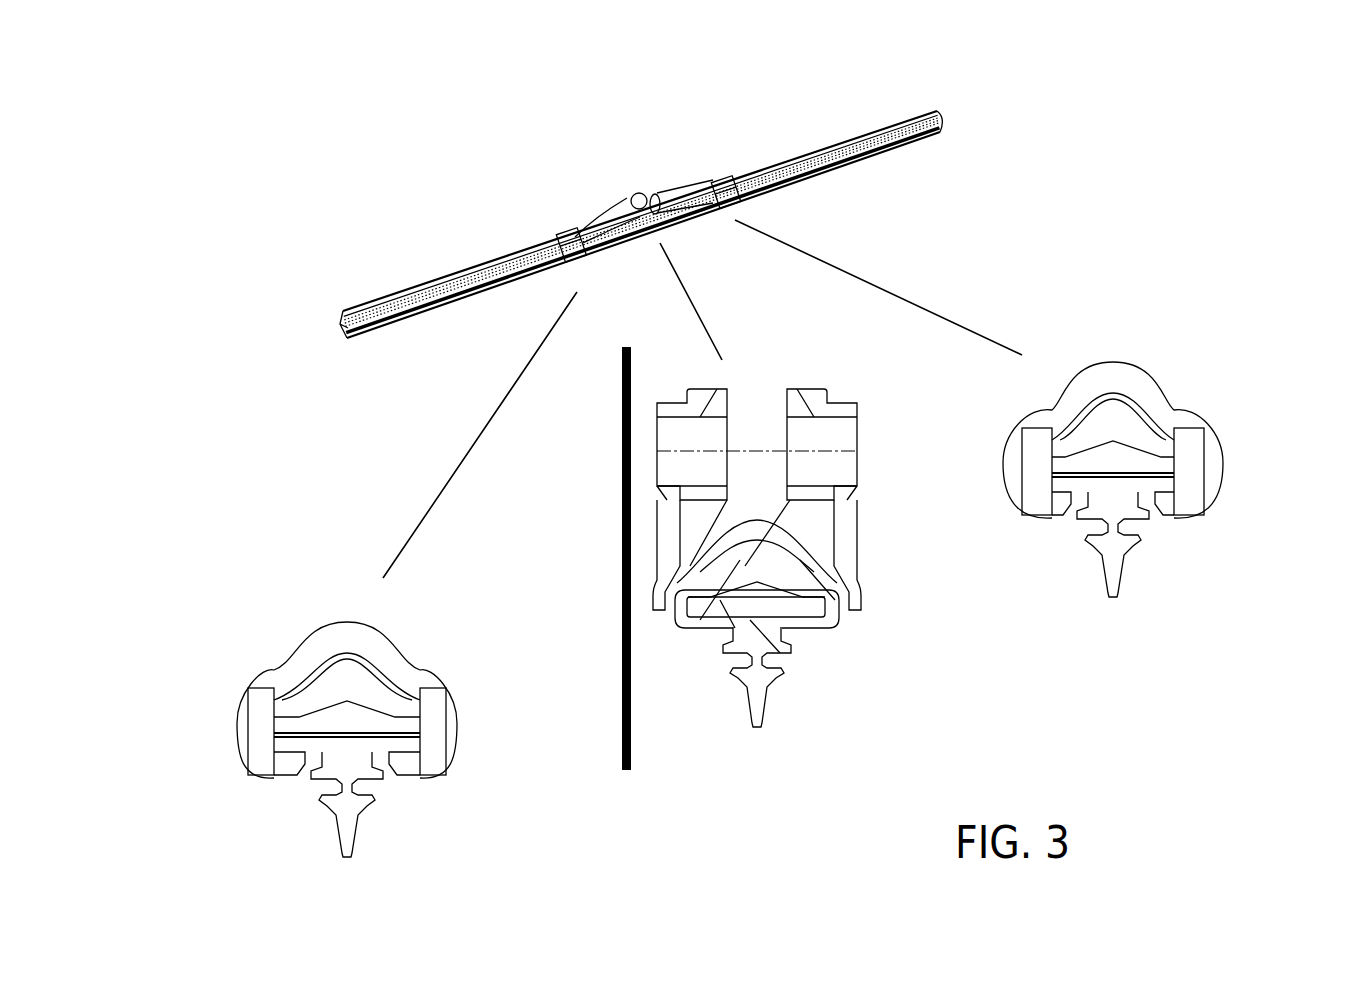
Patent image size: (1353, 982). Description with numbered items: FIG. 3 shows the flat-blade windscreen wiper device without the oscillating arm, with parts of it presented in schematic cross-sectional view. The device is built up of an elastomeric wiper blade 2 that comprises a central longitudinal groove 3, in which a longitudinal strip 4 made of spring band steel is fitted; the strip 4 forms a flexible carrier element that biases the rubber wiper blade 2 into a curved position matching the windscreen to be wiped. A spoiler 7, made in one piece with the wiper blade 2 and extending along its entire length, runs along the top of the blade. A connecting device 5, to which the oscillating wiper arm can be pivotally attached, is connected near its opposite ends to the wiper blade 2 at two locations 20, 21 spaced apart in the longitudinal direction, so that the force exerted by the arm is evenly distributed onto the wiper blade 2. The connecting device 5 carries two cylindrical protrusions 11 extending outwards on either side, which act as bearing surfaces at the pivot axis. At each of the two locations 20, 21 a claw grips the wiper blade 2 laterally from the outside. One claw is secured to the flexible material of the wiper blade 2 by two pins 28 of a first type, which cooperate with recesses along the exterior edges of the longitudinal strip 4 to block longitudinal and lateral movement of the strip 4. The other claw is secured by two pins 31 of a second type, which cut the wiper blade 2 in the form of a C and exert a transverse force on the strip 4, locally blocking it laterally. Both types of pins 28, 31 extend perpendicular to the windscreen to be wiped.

The wiper blade 2 is at (888, 153).
The longitudinal groove 3 is at (797, 600).
The longitudinal strip 4 is at (382, 730).
The connecting device 5 is at (812, 528).
The spoiler 7 is at (415, 294).
The cylindrical protrusions 11 is at (678, 433).
The location 20 is at (569, 205).
The location 21 is at (708, 158).
The pins of a first type 28 is at (1057, 487).
The pins of a second type 31 is at (268, 747).